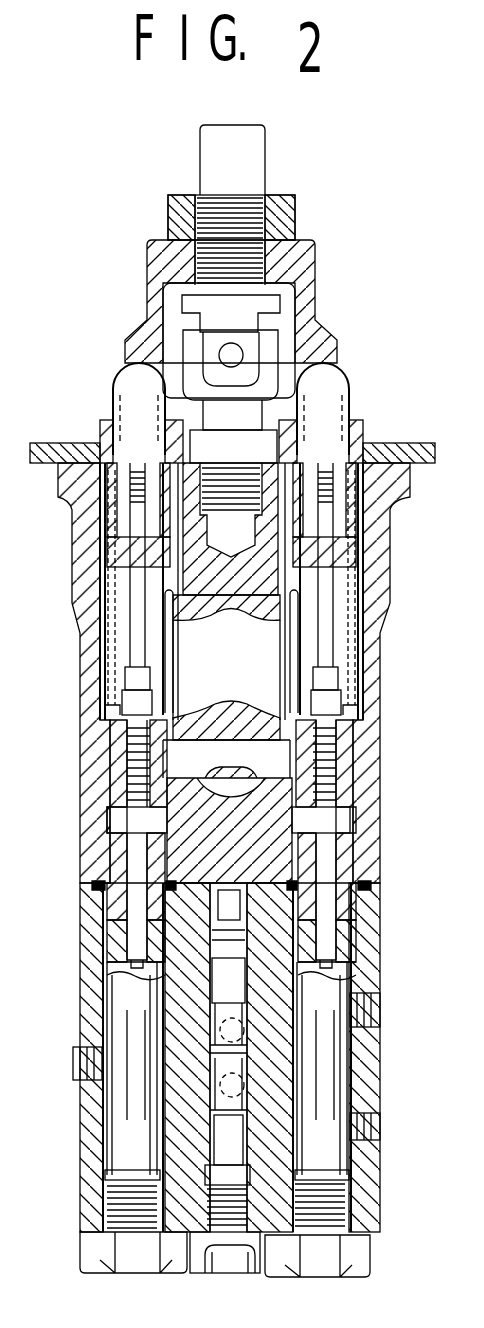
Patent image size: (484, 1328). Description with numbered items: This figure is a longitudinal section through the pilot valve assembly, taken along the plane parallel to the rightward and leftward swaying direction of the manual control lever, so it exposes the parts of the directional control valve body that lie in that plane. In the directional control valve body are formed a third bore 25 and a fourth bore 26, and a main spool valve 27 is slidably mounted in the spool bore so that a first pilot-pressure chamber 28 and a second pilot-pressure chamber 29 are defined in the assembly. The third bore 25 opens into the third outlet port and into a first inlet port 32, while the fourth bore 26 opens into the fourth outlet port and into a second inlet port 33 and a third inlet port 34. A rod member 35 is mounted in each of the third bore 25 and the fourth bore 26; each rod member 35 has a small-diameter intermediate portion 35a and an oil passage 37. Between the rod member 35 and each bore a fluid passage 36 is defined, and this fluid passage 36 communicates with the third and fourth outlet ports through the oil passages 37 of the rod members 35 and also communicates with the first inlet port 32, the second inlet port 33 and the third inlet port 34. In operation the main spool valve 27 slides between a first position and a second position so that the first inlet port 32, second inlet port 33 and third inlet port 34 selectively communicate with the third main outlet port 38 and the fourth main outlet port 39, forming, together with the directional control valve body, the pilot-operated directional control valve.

The third bore 25 is at (80, 937).
The fourth bore 26 is at (348, 932).
The main spool valve 27 is at (222, 976).
The first pilot-pressure chamber 28 is at (226, 900).
The second pilot-pressure chamber 29 is at (62, 1203).
The first inlet port 32 is at (190, 1078).
The second inlet port 33 is at (108, 816).
The third inlet port 34 is at (348, 822).
The rod member 35 is at (125, 1040).
The small-diameter intermediate portion 35a is at (345, 1053).
The fluid passage 36 is at (413, 983).
The oil passage 37 is at (145, 858).
The third main outlet port 38 is at (242, 1092).
The fourth main outlet port 39 is at (242, 1033).